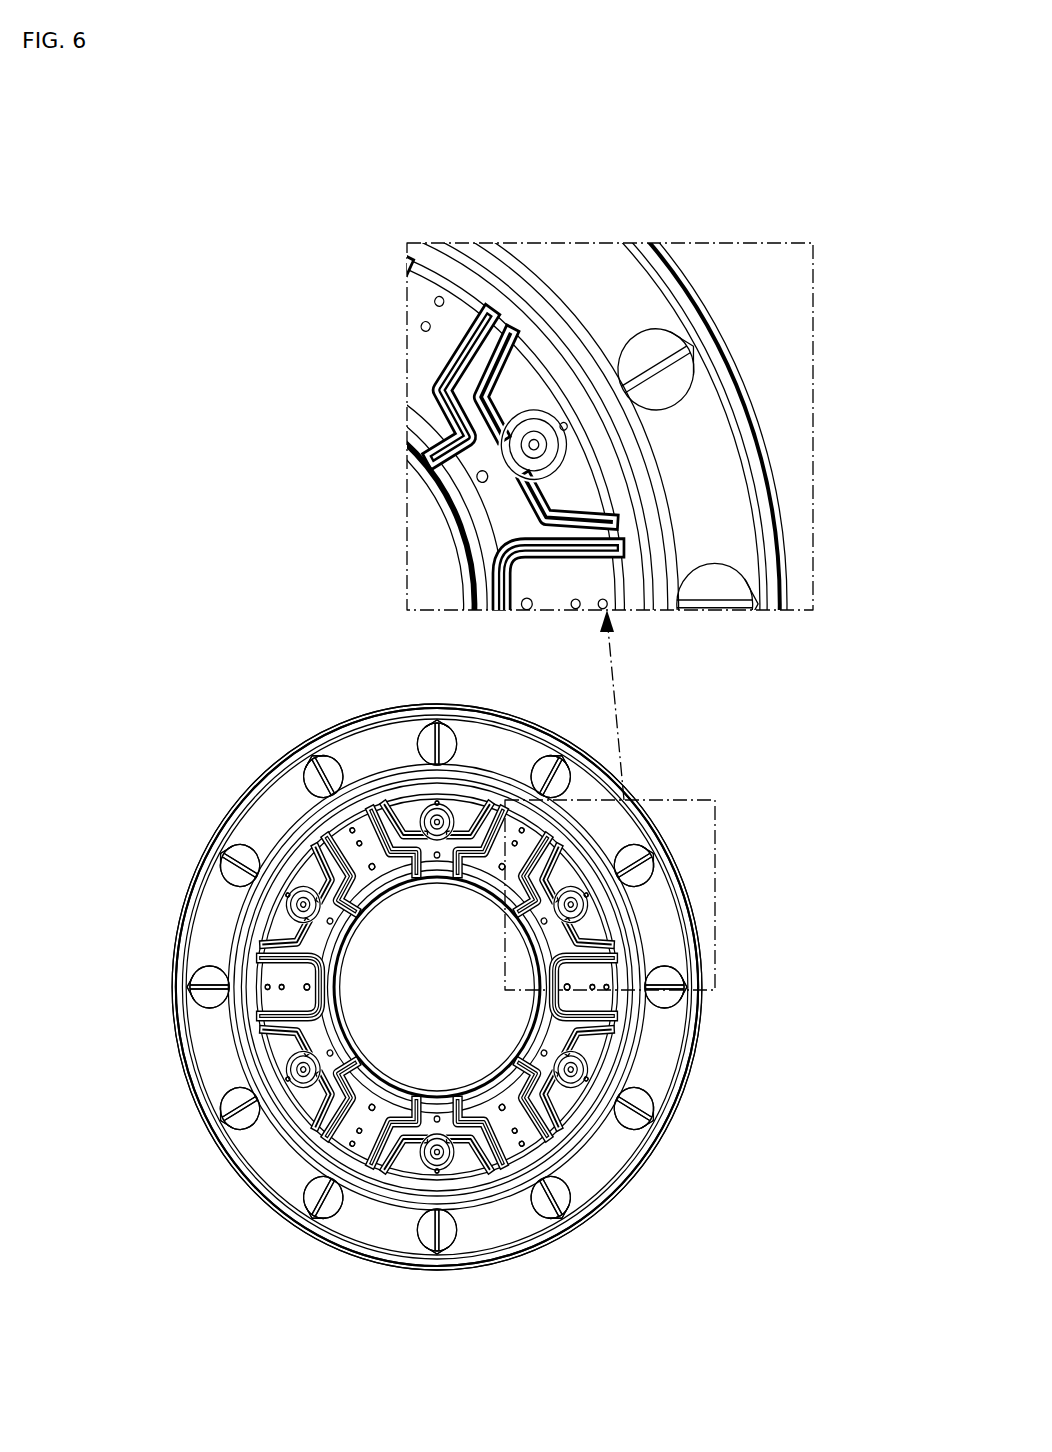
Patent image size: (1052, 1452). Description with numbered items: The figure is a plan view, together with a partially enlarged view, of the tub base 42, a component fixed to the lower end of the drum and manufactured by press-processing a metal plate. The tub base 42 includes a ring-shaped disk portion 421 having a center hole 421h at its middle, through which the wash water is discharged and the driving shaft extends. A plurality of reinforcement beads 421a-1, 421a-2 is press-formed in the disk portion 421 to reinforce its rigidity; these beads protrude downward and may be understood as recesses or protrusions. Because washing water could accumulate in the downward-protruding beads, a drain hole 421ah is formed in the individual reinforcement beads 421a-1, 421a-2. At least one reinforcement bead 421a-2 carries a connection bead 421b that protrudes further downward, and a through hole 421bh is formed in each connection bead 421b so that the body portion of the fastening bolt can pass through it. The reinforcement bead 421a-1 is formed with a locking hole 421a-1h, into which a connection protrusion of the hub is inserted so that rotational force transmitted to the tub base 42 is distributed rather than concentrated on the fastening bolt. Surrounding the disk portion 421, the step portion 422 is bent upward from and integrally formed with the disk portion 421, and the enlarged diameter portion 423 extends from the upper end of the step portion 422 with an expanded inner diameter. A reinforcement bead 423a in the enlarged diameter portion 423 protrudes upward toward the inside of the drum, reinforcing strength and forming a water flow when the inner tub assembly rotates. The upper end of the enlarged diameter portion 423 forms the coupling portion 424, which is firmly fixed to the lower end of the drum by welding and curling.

The tub base 42 is at (278, 746).
The disk portion 421 is at (320, 855).
The reinforcement bead 421a-1 is at (350, 1132).
The locking hole 421a-1h is at (300, 990).
The reinforcement bead 421a-2 is at (400, 1165).
The drain hole 421ah is at (262, 982).
The connection bead 421b is at (455, 1160).
The through hole 421bh is at (445, 1168).
The center hole 421h is at (466, 992).
The step portion 422 is at (595, 1135).
The enlarged diameter portion 423 is at (655, 1000).
The reinforcement bead 423a is at (432, 1256).
The coupling portion 424 is at (770, 520).